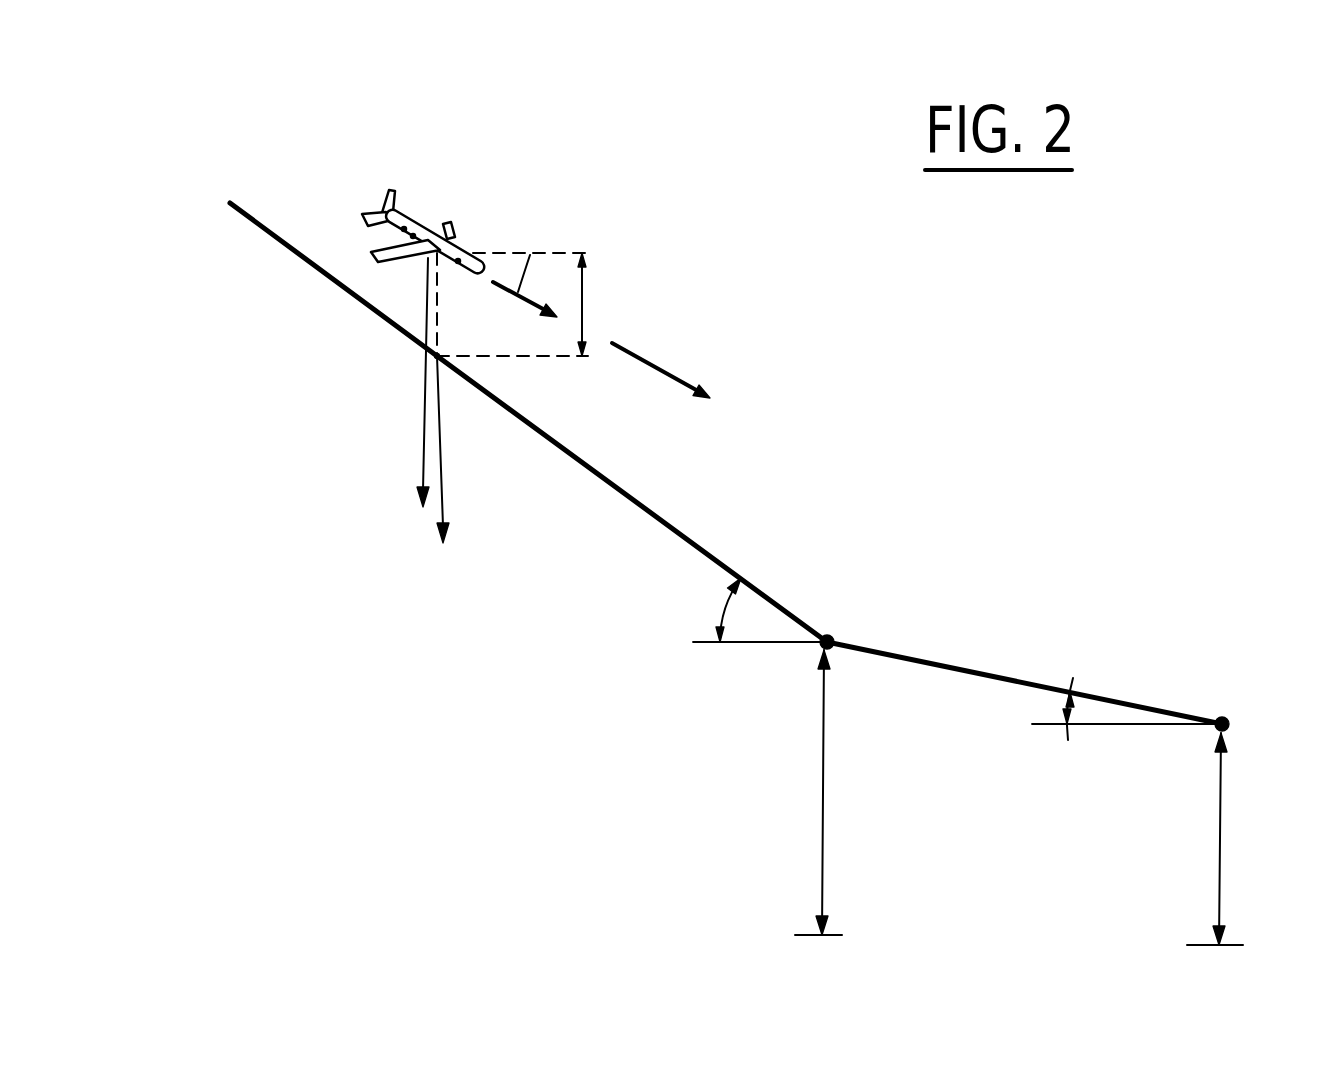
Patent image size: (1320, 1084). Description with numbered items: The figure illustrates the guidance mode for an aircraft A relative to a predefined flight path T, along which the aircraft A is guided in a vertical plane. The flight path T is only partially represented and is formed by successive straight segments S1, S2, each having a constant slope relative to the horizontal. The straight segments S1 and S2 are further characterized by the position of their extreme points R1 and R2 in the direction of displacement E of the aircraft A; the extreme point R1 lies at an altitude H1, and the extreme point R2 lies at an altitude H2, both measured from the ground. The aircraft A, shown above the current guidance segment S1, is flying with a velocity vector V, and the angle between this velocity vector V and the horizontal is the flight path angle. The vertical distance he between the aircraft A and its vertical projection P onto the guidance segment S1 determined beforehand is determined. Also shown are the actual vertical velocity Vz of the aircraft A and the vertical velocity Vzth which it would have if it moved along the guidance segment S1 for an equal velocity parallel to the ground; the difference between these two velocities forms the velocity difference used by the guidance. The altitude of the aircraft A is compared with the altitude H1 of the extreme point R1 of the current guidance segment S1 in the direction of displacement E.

The predefined flight path T is at (233, 182).
The aircraft A is at (420, 232).
The vertical projection P is at (421, 363).
The velocity vector V is at (510, 301).
The vertical distance he is at (527, 304).
The direction of displacement E is at (682, 327).
The actual vertical velocity Vz is at (411, 433).
The theoretical vertical velocity Vzth is at (521, 470).
The first straight segment S1 is at (708, 552).
The extreme point of first straight segment R1 is at (833, 637).
The second straight segment S2 is at (1020, 678).
The extreme point of second straight segment R2 is at (1224, 717).
The altitude of first extreme point H1 is at (823, 823).
The altitude of second extreme point H2 is at (1221, 846).